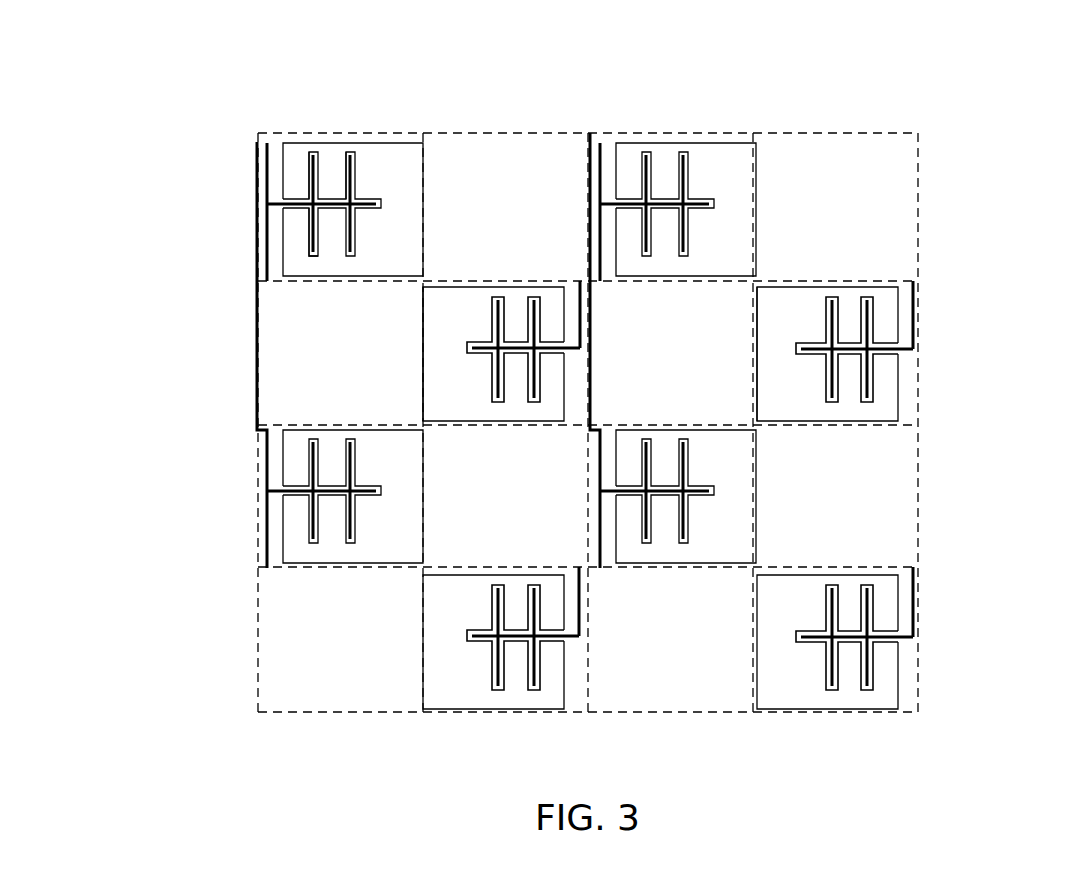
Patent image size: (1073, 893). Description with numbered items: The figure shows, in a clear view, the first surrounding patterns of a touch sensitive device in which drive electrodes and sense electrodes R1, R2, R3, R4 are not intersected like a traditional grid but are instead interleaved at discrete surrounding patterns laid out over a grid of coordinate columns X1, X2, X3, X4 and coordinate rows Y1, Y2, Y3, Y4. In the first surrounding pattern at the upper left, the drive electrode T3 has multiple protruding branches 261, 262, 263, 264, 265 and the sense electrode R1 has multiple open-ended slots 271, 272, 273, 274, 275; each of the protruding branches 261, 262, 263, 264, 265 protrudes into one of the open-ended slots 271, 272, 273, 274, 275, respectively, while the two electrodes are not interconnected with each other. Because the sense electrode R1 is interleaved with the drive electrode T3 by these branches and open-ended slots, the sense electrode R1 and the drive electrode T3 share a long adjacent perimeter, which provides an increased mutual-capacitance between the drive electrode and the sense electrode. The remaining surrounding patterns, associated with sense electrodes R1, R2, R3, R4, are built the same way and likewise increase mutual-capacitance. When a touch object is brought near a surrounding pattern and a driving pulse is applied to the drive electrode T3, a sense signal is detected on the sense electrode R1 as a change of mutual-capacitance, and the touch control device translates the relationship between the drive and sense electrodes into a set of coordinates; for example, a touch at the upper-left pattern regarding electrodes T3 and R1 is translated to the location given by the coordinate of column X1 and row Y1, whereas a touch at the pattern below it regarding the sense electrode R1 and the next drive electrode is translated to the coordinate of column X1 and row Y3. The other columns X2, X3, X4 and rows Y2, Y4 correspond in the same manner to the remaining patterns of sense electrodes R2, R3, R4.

The coordinate column X1 is at (311, 371).
The coordinate column X2 is at (477, 371).
The coordinate column X3 is at (642, 371).
The coordinate column X4 is at (835, 371).
The coordinate row Y1 is at (497, 184).
The coordinate row Y2 is at (497, 328).
The coordinate row Y3 is at (497, 470).
The coordinate row Y4 is at (497, 639).
The drive electrode T3 is at (265, 186).
The sense electrode R1 is at (353, 209).
The sense electrode R2 is at (441, 354).
The sense electrode R3 is at (678, 212).
The sense electrode R4 is at (772, 354).
The protruding branch 261 is at (375, 202).
The open-ended slot 271 is at (381, 207).
The protruding branch 262 is at (349, 165).
The open-ended slot 272 is at (346, 172).
The protruding branch 263 is at (309, 246).
The open-ended slot 273 is at (344, 256).
The protruding branch 264 is at (306, 168).
The open-ended slot 274 is at (303, 176).
The protruding branch 265 is at (310, 232).
The open-ended slot 275 is at (307, 216).